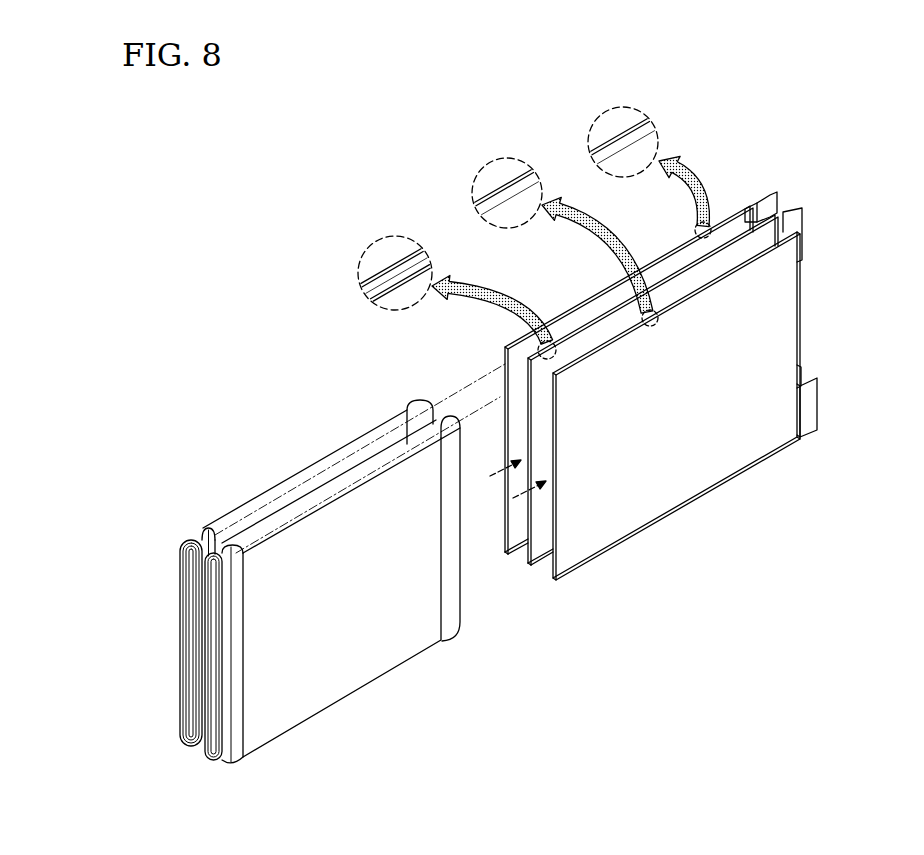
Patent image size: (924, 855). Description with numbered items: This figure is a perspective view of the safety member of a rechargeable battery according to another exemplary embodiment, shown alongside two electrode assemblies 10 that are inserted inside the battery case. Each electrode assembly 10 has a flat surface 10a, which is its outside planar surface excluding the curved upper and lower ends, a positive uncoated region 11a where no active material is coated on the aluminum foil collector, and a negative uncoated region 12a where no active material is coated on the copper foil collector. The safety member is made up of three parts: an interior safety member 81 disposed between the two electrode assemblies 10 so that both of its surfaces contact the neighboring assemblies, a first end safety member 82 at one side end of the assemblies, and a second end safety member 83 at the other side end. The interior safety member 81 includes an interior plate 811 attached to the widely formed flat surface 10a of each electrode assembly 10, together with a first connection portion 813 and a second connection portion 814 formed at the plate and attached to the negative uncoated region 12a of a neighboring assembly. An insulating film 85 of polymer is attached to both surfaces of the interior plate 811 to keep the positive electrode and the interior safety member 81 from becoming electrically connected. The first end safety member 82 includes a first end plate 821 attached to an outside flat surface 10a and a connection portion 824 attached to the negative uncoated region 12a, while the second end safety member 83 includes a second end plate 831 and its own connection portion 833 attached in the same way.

The electrode assembly 10 is at (346, 560).
The flat surface 10a is at (378, 655).
The positive uncoated region 11a is at (200, 533).
The negative uncoated region 12a is at (422, 408).
The interior safety member 81 is at (705, 381).
The first end safety member 82 is at (729, 406).
The second end safety member 83 is at (644, 354).
The insulating film 85 is at (378, 274).
The interior plate 811 is at (386, 267).
The first connection portion 813 is at (790, 226).
The second connection portion 814 is at (800, 370).
The first end plate 821 is at (512, 191).
The connection portion 824 is at (808, 403).
The second end plate 831 is at (612, 145).
The connection portion 833 is at (770, 196).